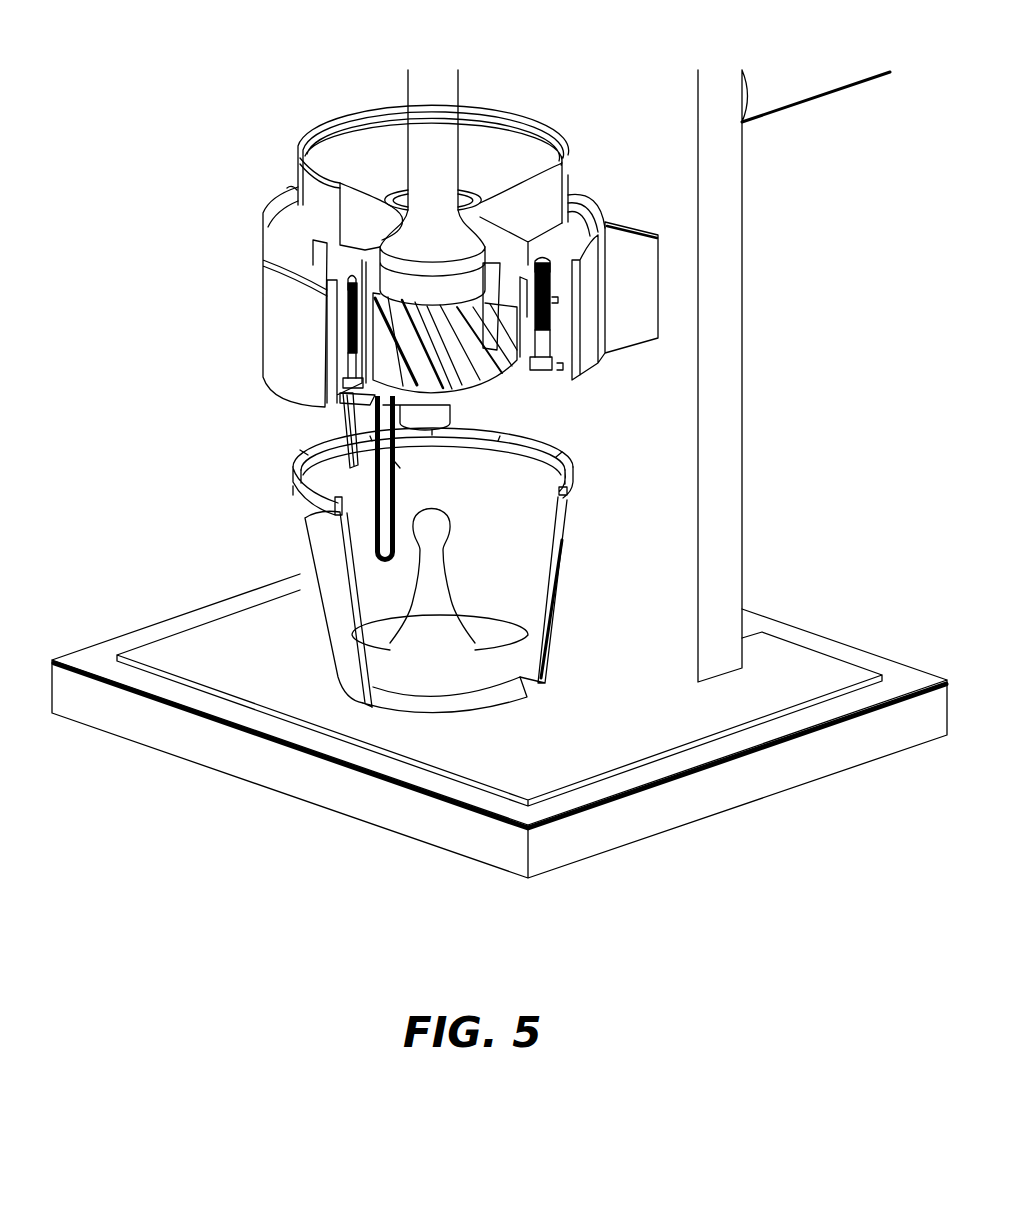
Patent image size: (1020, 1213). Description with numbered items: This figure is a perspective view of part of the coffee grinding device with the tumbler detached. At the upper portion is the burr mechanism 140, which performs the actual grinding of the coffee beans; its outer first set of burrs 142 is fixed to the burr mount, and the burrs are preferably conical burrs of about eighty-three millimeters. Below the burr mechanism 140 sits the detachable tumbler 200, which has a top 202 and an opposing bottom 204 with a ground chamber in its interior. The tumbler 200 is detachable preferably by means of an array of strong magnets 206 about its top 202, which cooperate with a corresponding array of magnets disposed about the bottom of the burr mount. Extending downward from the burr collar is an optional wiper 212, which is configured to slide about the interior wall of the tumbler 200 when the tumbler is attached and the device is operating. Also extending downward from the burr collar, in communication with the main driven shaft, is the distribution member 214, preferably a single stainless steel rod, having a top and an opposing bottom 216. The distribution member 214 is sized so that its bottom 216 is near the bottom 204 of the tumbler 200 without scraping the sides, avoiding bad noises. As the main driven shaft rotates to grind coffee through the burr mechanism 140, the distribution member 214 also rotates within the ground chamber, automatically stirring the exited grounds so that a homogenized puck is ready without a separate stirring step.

The burr mechanism 140 is at (545, 405).
The outer first set of burrs 142 is at (500, 265).
The tumbler 200 is at (457, 570).
The top 202 is at (262, 490).
The bottom 204 is at (555, 699).
The array of strong magnets 206 is at (572, 466).
The wiper 212 is at (345, 401).
The distribution member 214 is at (393, 466).
The bottom 216 is at (353, 546).